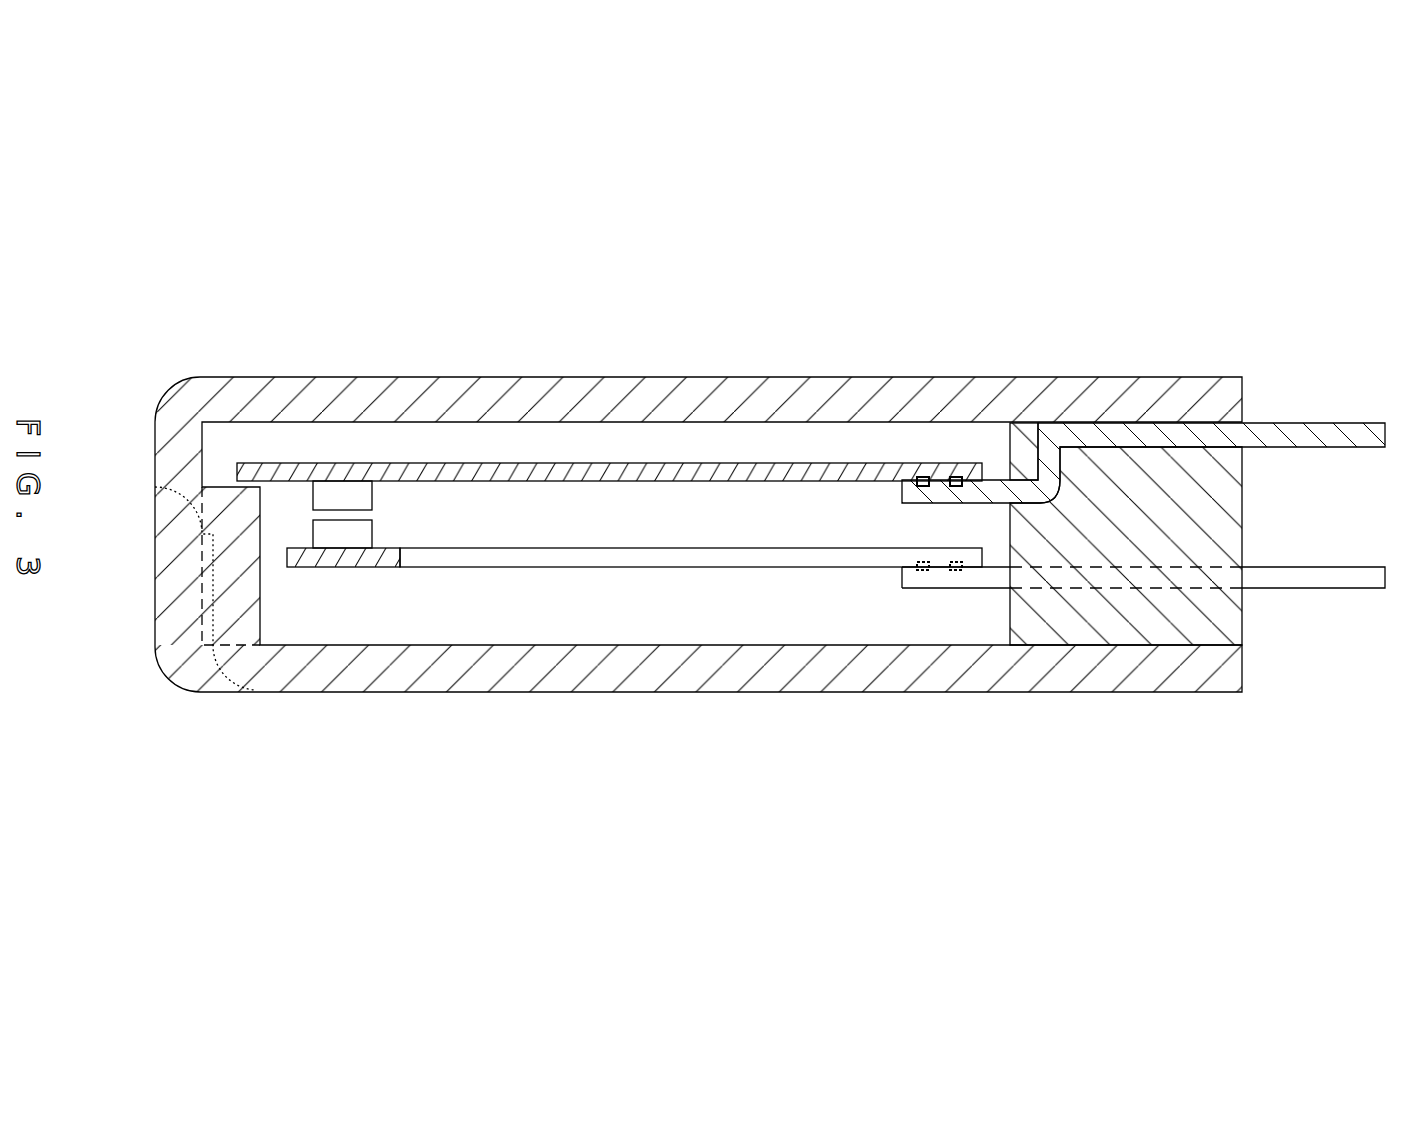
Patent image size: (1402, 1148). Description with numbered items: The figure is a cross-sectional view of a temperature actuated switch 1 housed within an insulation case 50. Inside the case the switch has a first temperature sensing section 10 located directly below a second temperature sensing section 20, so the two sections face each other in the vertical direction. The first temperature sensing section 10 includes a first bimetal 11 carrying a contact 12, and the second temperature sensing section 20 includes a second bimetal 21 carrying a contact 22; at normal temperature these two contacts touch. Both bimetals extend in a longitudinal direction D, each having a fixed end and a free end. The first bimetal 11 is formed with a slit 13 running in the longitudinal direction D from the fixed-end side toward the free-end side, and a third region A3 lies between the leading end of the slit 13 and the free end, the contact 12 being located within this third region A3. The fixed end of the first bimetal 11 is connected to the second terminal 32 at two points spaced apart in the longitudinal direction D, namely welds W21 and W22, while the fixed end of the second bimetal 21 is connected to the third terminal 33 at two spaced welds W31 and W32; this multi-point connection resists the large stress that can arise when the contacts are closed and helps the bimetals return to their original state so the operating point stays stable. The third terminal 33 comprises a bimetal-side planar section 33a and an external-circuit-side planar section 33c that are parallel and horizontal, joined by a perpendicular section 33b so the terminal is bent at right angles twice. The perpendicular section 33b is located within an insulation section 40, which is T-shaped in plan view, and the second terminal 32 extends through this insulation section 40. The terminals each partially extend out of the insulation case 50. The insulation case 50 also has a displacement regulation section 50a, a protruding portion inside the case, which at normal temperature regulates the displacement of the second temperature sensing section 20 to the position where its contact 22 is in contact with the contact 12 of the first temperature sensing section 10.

The temperature actuated switch 1 is at (215, 352).
The first temperature sensing section 10 is at (544, 632).
The first bimetal 11 is at (568, 567).
The contact 12 is at (322, 533).
The slit 13 is at (400, 553).
The second temperature sensing section 20 is at (609, 413).
The second bimetal 21 is at (563, 470).
The contact 22 is at (358, 481).
The second terminal 32 is at (1312, 588).
The third terminal 33 is at (1143, 414).
The bimetal-side planar section 33a is at (1000, 483).
The perpendicular section 33b is at (1058, 468).
The external-circuit-side planar section 33c is at (1297, 428).
The insulation section 40 is at (1125, 627).
The insulation case 50 is at (706, 378).
The displacement regulation section 50a is at (222, 492).
The third region A3 is at (345, 563).
The longitudinal direction D is at (443, 278).
The weld W21 is at (918, 570).
The weld W22 is at (959, 570).
The weld W31 is at (918, 477).
The weld W32 is at (955, 477).